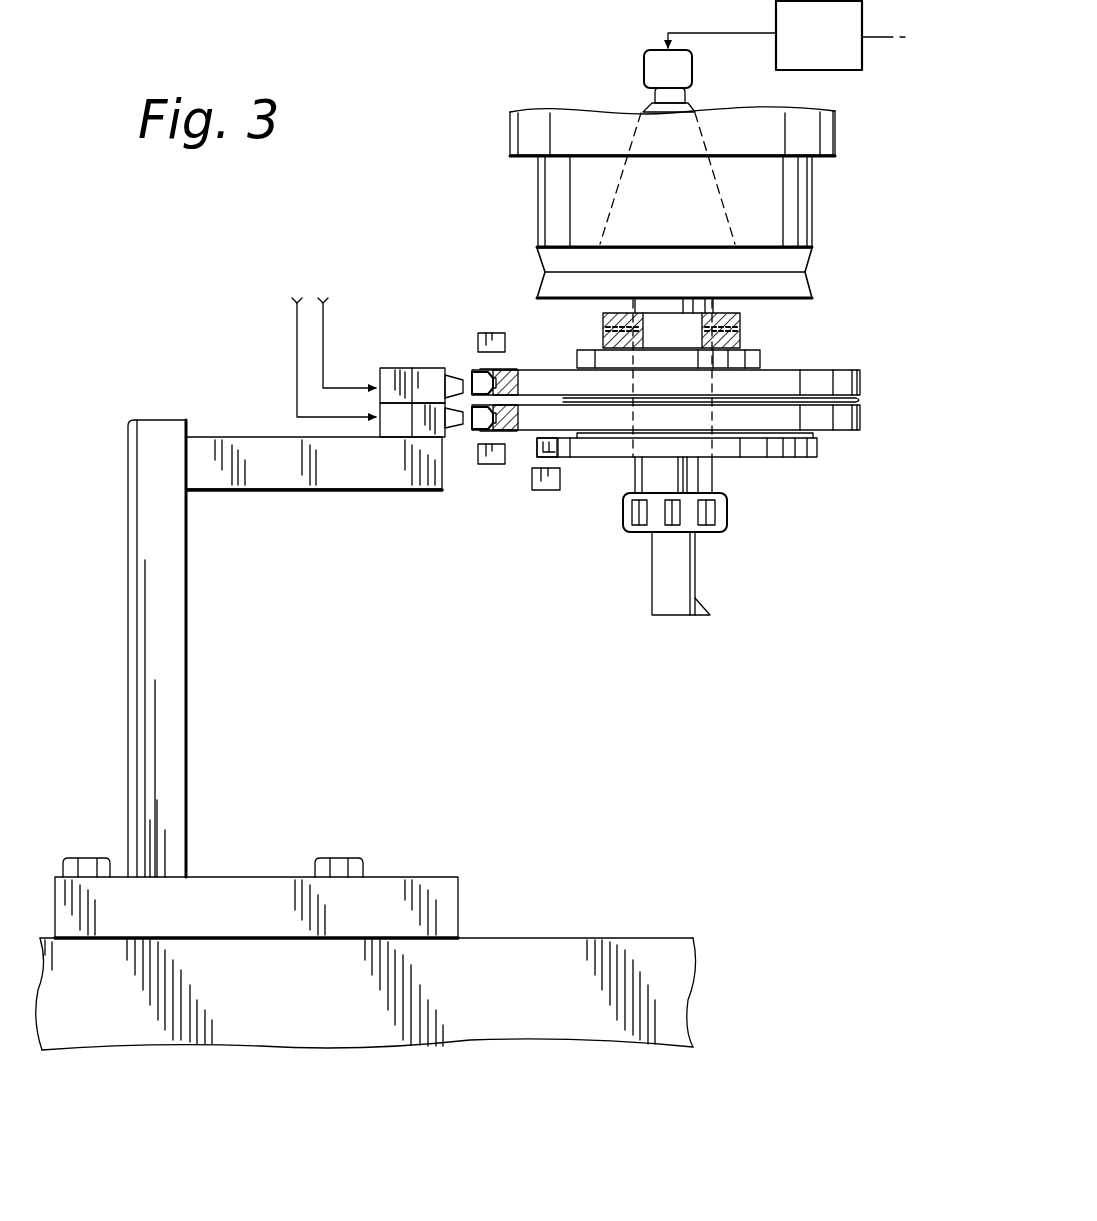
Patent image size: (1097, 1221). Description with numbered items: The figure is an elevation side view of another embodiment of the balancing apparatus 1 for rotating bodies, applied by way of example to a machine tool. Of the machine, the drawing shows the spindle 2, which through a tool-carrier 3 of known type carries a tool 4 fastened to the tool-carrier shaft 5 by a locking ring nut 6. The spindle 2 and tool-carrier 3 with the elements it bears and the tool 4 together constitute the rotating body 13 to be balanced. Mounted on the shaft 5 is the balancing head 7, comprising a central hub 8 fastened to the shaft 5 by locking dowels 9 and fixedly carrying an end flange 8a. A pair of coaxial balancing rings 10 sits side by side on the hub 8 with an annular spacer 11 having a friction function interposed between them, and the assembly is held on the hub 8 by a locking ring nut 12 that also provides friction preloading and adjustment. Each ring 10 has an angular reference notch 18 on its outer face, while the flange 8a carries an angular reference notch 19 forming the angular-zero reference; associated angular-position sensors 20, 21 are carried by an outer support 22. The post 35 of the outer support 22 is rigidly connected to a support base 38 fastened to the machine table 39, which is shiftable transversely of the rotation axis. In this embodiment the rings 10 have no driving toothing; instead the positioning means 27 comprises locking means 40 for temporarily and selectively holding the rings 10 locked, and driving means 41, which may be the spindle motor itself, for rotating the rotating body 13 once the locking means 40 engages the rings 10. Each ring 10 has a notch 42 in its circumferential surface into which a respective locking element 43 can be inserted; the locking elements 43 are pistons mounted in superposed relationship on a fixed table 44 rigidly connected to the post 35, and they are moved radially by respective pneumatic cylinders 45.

The balancing apparatus 1 is at (736, 716).
The spindle 2 is at (766, 214).
The tool-carrier 3 is at (812, 278).
The tool 4 is at (695, 560).
The tool-carrier shaft 5 is at (702, 478).
The locking ring nut 6 is at (727, 518).
The balancing head 7 is at (818, 306).
The central hub 8 is at (742, 343).
The end flange 8a is at (774, 458).
The locking dowels 9 is at (603, 326).
The balancing rings 10 is at (860, 382).
The annular spacer 11 is at (858, 400).
The locking ring nut 12 is at (763, 360).
The rotating body 13 is at (524, 257).
The angular reference notch 18 is at (505, 372).
The angular reference notch 19 is at (549, 456).
The angular-position sensor 20 is at (480, 333).
The angular-position sensor 21 is at (550, 491).
The outer support 22 is at (266, 434).
The positioning means 27 is at (475, 326).
The post 35 is at (178, 560).
The support base 38 is at (440, 903).
The machine table 39 is at (527, 945).
The locking means 40 is at (374, 325).
The driving means 41 is at (837, 48).
The notch 42 is at (478, 378).
The locking element 43 is at (455, 379).
The fixed table 44 is at (294, 484).
The pneumatic cylinders 45 is at (385, 375).